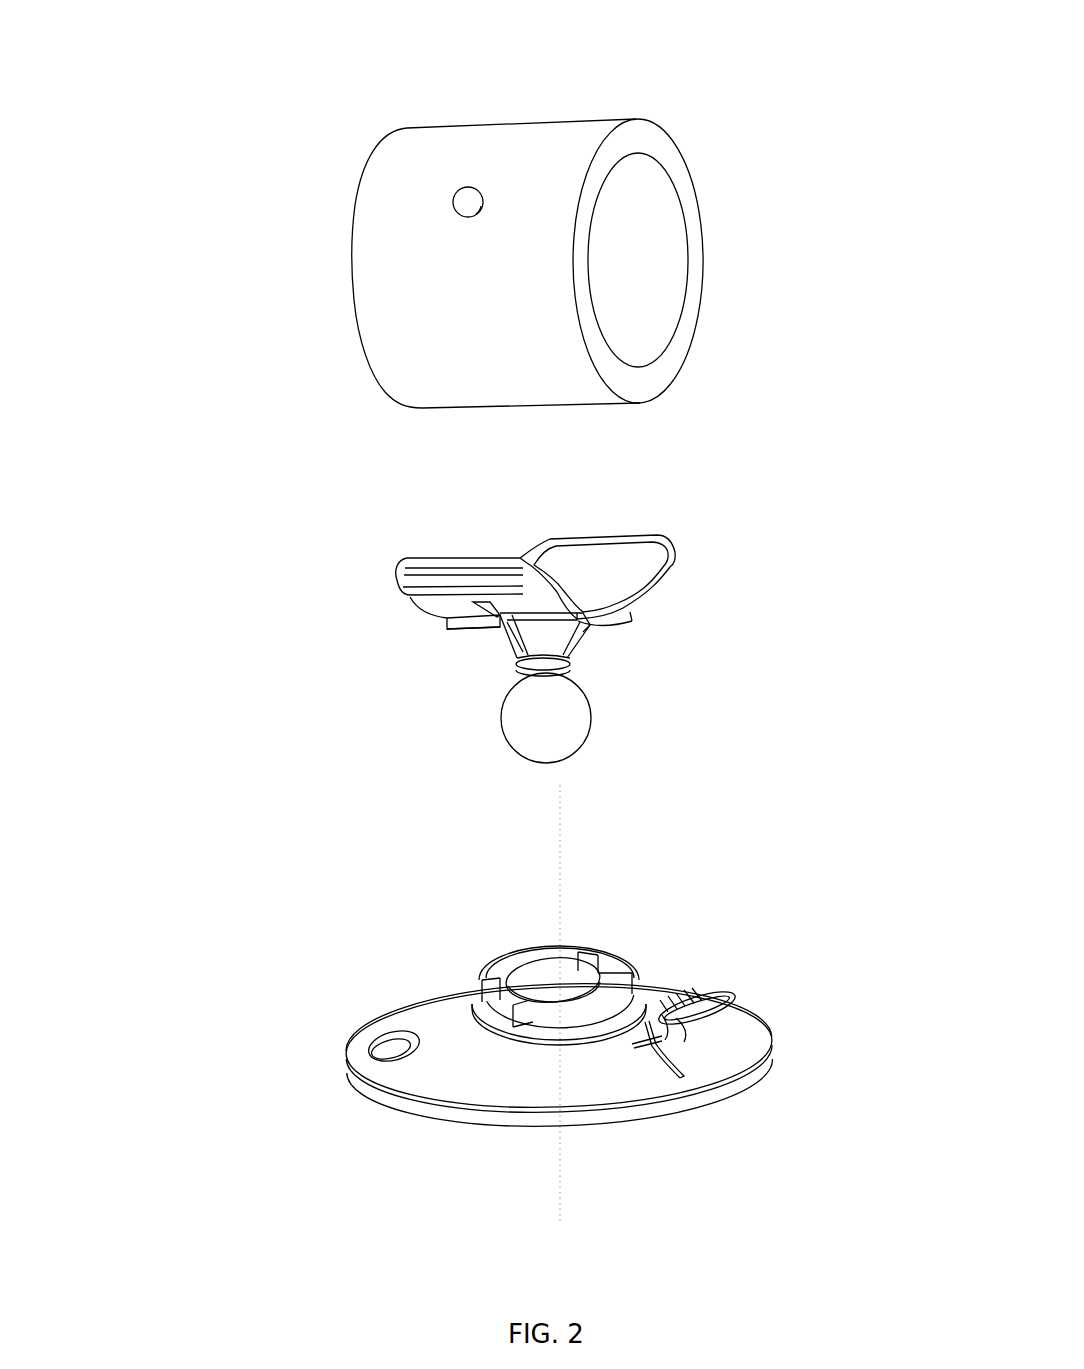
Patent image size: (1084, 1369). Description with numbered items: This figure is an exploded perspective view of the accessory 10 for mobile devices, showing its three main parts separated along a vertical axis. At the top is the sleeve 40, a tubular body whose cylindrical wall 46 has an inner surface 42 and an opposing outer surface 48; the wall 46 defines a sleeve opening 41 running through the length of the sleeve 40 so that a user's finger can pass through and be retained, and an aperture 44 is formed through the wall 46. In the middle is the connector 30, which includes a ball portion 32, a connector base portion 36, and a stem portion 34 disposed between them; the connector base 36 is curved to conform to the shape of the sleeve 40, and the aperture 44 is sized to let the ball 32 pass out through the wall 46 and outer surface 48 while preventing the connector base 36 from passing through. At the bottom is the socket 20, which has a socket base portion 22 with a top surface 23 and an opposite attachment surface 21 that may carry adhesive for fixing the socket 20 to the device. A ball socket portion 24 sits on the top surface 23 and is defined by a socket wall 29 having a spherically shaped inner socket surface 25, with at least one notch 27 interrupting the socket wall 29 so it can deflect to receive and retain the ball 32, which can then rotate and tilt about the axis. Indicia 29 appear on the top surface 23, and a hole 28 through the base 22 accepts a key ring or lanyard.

The accessory 10 is at (222, 459).
The socket 20 is at (632, 1105).
The attachment surface 21 is at (489, 1146).
The socket base portion 22 is at (440, 1072).
The top surface 23 is at (405, 985).
The ball socket portion 24 is at (488, 963).
The inner socket surface 25 is at (555, 960).
The notch 27 is at (603, 962).
The hole 28 is at (383, 1045).
The socket wall 29 is at (518, 950).
The connector 30 is at (461, 557).
The ball portion 32 is at (593, 712).
The stem portion 34 is at (520, 658).
The connector base portion 36 is at (400, 565).
The sleeve 40 is at (361, 196).
The sleeve opening 41 is at (653, 232).
The inner surface 42 is at (683, 319).
The aperture 44 is at (465, 197).
The cylindrical wall 46 is at (667, 392).
The outer surface 48 is at (552, 150).